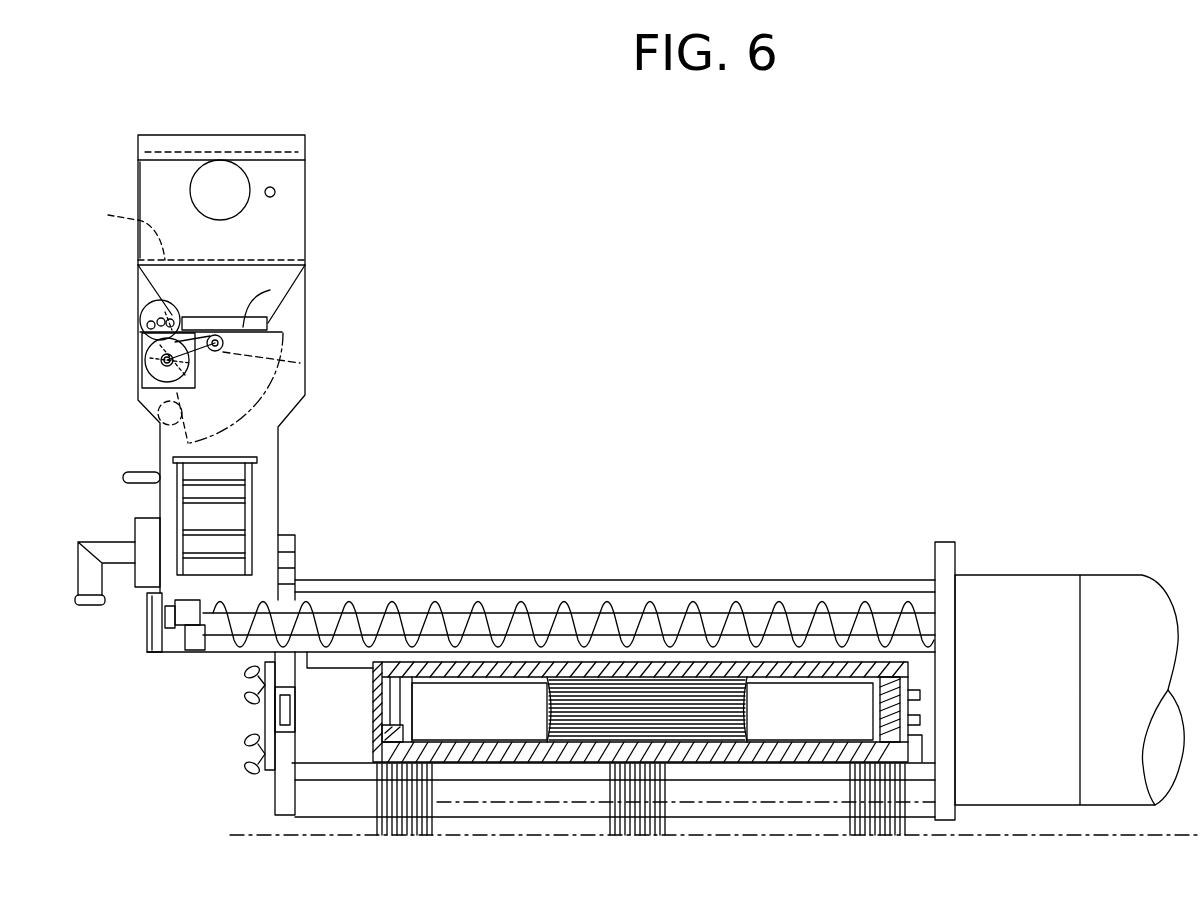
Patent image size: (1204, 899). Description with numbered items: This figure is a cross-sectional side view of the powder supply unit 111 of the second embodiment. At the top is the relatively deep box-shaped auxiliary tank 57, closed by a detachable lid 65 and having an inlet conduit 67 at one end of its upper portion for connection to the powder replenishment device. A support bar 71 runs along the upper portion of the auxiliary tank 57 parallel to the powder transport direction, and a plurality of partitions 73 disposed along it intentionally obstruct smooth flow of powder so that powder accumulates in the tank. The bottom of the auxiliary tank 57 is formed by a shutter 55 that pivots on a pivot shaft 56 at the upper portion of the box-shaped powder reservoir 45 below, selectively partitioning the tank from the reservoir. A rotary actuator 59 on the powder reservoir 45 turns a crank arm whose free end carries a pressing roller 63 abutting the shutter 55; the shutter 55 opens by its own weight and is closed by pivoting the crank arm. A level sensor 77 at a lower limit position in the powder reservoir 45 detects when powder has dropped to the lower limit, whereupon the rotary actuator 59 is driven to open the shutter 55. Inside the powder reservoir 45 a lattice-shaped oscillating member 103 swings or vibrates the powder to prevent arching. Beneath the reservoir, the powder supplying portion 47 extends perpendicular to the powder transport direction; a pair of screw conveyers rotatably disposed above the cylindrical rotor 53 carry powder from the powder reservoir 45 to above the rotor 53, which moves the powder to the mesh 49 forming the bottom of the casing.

The powder supply unit 111 is at (332, 245).
The lid 65 is at (262, 136).
The auxiliary tank 57 is at (158, 178).
The inlet conduit 67 is at (250, 182).
The support bar 71 is at (278, 193).
The partitions 73 is at (117, 228).
The shutter 55 is at (270, 290).
The pivot shaft 56 is at (145, 318).
The rotary actuator 59 is at (142, 360).
The pressing roller 63 is at (286, 364).
The powder reservoir 45 is at (263, 443).
The oscillating member 103 is at (250, 513).
The level sensor 77 is at (135, 527).
The powder supplying portion 47 is at (248, 724).
The rotor 53 is at (375, 783).
The mesh 49 is at (818, 768).